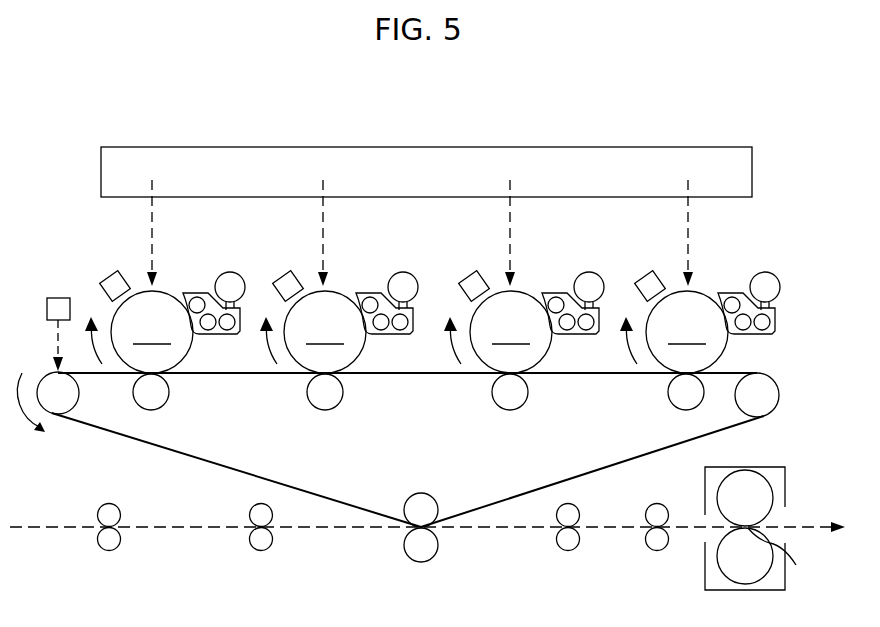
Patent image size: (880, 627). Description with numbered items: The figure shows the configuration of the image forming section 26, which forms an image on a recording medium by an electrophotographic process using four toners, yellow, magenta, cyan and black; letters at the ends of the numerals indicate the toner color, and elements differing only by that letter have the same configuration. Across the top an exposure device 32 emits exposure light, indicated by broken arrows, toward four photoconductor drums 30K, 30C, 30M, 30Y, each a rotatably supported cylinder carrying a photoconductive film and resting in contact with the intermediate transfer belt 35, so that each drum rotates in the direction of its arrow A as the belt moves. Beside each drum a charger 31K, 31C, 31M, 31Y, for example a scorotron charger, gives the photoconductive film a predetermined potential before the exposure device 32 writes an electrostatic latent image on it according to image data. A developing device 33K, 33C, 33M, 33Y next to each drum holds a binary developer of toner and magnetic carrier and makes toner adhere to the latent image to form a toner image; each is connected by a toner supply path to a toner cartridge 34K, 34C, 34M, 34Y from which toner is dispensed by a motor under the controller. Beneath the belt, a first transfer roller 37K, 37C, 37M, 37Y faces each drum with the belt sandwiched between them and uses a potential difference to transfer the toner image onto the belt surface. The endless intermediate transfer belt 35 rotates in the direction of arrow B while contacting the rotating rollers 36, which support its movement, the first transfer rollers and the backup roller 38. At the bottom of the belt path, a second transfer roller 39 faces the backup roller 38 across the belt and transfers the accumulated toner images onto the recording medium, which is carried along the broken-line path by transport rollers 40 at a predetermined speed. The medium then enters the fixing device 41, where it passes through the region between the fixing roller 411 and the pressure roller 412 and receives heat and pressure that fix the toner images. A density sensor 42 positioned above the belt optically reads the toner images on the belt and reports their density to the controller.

The image forming section 26 is at (776, 152).
The exposure device 32 is at (101, 180).
The density sensor 42 is at (52, 298).
The photoconductor drum 30K is at (152, 332).
The photoconductor drum 30C is at (325, 332).
The photoconductor drum 30M is at (511, 332).
The photoconductor drum 30Y is at (687, 332).
The charger 31K is at (110, 267).
The charger 31C is at (282, 267).
The charger 31M is at (470, 267).
The charger 31Y is at (647, 267).
The developing device 33K is at (205, 292).
The developing device 33C is at (378, 292).
The developing device 33M is at (564, 292).
The developing device 33Y is at (740, 292).
The toner cartridge 34K is at (236, 269).
The toner cartridge 34C is at (408, 269).
The toner cartridge 34M is at (596, 269).
The toner cartridge 34Y is at (771, 269).
The first transfer roller 37K is at (185, 397).
The first transfer roller 37C is at (359, 398).
The first transfer roller 37M is at (546, 398).
The first transfer roller 37Y is at (661, 402).
The intermediate transfer belt 35 is at (249, 474).
The rotating roller 36 is at (56, 414).
The backup roller 38 is at (420, 493).
The second transfer roller 39 is at (404, 547).
The transport rollers 40 is at (114, 504).
The fixing device 41 is at (738, 506).
The fixing roller 411 is at (726, 500).
The pressure roller 412 is at (722, 568).